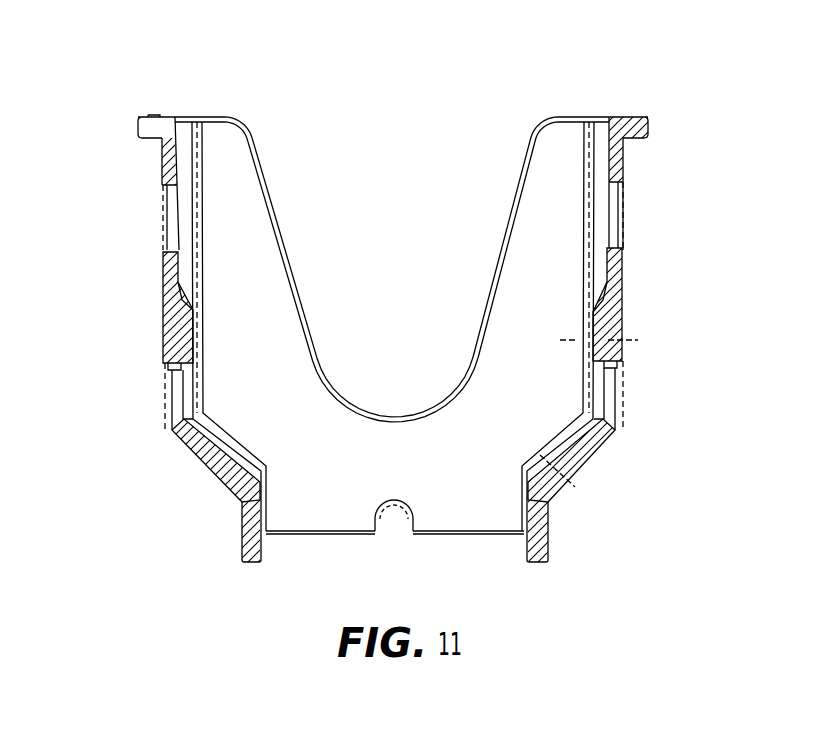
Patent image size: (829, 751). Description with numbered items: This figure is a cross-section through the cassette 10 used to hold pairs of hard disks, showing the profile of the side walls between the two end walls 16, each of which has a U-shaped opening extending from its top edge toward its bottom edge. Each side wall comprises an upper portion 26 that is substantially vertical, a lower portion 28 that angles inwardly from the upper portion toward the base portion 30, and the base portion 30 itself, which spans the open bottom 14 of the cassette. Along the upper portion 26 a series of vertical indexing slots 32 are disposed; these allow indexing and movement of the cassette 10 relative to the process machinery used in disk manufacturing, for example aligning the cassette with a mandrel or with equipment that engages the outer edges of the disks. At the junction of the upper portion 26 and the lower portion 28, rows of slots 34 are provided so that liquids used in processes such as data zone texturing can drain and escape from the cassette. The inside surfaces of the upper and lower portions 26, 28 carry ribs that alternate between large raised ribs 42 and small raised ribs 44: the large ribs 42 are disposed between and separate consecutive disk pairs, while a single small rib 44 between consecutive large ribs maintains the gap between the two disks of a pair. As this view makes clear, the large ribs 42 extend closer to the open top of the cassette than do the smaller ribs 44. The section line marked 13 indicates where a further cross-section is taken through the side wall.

The cassette 10 is at (627, 91).
The end wall 16 is at (562, 188).
The vertical indexing slot 32 is at (166, 213).
The upper portion 26 is at (625, 250).
The lower portion 28 is at (163, 307).
The slot 34 is at (172, 421).
The base portion 30 is at (243, 548).
The large raised rib 42 is at (190, 290).
The small raised rib 44 is at (195, 326).
The section line 13- 13 is at (561, 322).
The open bottom 14 is at (538, 452).